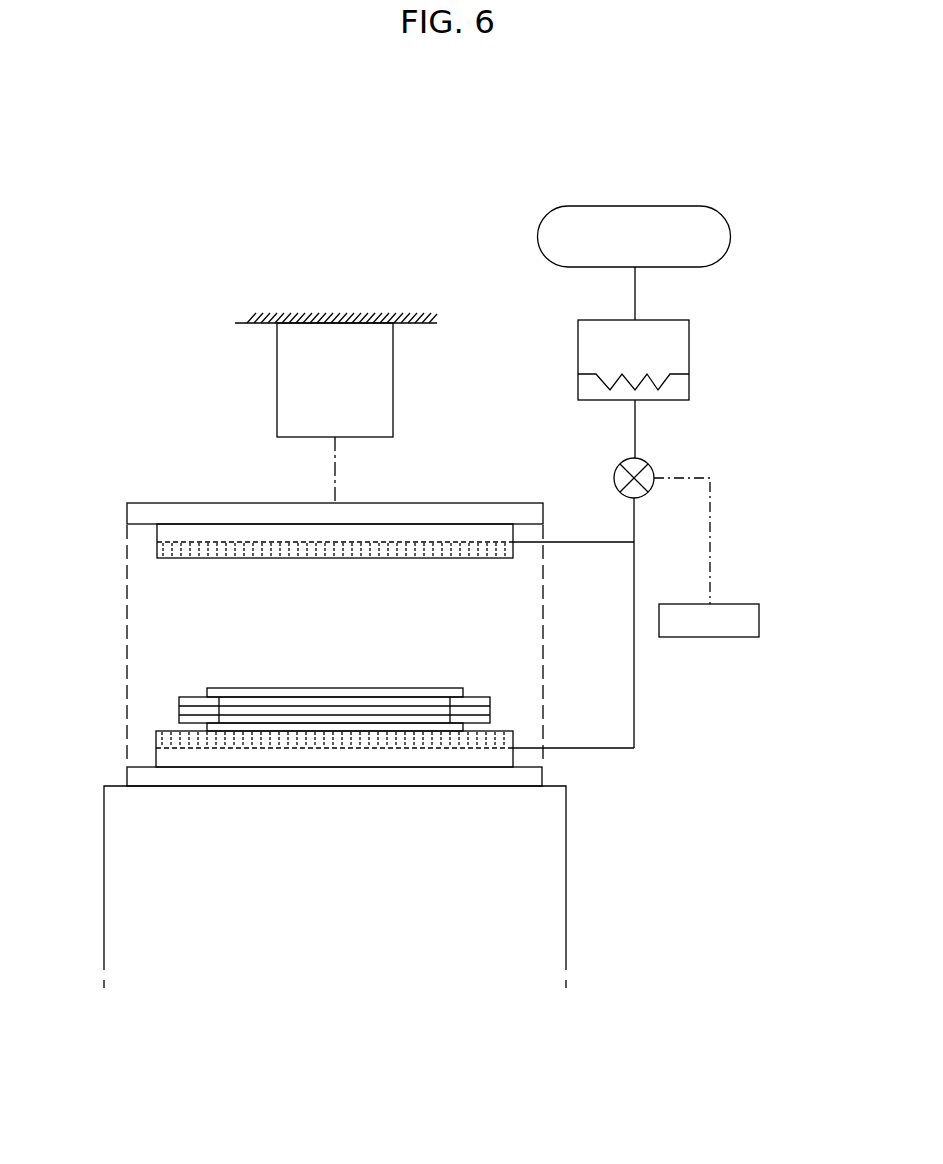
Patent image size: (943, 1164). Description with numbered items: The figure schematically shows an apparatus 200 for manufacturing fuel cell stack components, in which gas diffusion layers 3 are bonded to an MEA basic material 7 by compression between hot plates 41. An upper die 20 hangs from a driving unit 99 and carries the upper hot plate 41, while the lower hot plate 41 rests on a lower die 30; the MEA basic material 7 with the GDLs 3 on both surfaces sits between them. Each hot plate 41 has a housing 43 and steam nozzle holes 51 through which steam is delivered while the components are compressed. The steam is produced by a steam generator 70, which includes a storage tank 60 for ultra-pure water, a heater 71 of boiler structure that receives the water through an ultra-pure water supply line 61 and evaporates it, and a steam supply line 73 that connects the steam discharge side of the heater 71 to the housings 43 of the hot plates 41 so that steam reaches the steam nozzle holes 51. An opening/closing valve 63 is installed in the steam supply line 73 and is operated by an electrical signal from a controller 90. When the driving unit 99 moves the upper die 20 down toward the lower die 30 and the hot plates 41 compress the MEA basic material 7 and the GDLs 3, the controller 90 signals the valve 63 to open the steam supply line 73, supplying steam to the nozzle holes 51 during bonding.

The apparatus for manufacturing fuel cell stack components 200 is at (421, 262).
The driving unit 99 is at (277, 378).
The upper die 20 is at (205, 503).
The housing 43 is at (157, 538).
The steam nozzle hole 51 is at (430, 548).
The hot plate 41 is at (273, 532).
The MEA basic material 7 is at (163, 694).
The gas diffusion layer 3 is at (229, 688).
The lower die 30 is at (186, 778).
The storage tank 60 is at (635, 206).
The ultra-pure water supply line 61 is at (635, 291).
The steam generator 70 is at (680, 305).
The heater 71 is at (578, 348).
The opening/closing valve 63 is at (614, 470).
The steam supply line 73 is at (634, 638).
The controller 90 is at (710, 637).